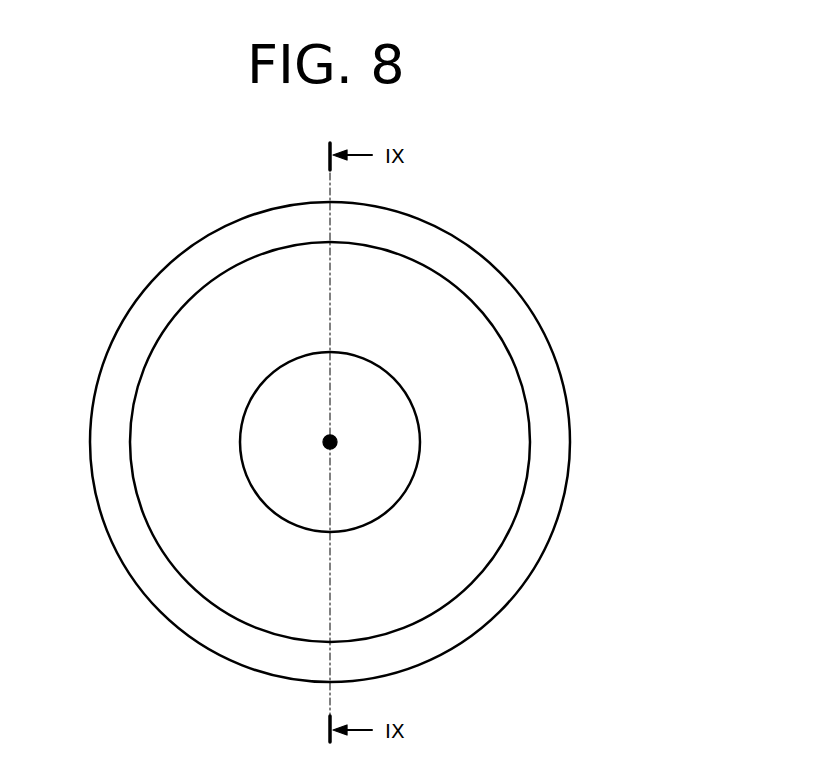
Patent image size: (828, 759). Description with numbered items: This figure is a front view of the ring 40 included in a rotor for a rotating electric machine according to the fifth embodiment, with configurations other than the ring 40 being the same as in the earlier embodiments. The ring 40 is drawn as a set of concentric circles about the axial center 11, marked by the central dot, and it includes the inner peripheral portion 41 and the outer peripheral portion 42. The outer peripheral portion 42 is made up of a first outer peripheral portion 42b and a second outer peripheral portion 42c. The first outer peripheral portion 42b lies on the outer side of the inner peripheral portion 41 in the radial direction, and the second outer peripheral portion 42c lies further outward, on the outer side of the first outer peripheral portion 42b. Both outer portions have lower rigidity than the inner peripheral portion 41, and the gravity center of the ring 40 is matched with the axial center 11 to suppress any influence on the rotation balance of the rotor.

The ring 40 is at (112, 171).
The inner peripheral portion 41 is at (438, 398).
The outer peripheral portion 42 is at (409, 442).
The first outer peripheral portion 42b is at (500, 407).
The second outer peripheral portion 42c is at (550, 432).
The axial center 11 is at (323, 442).